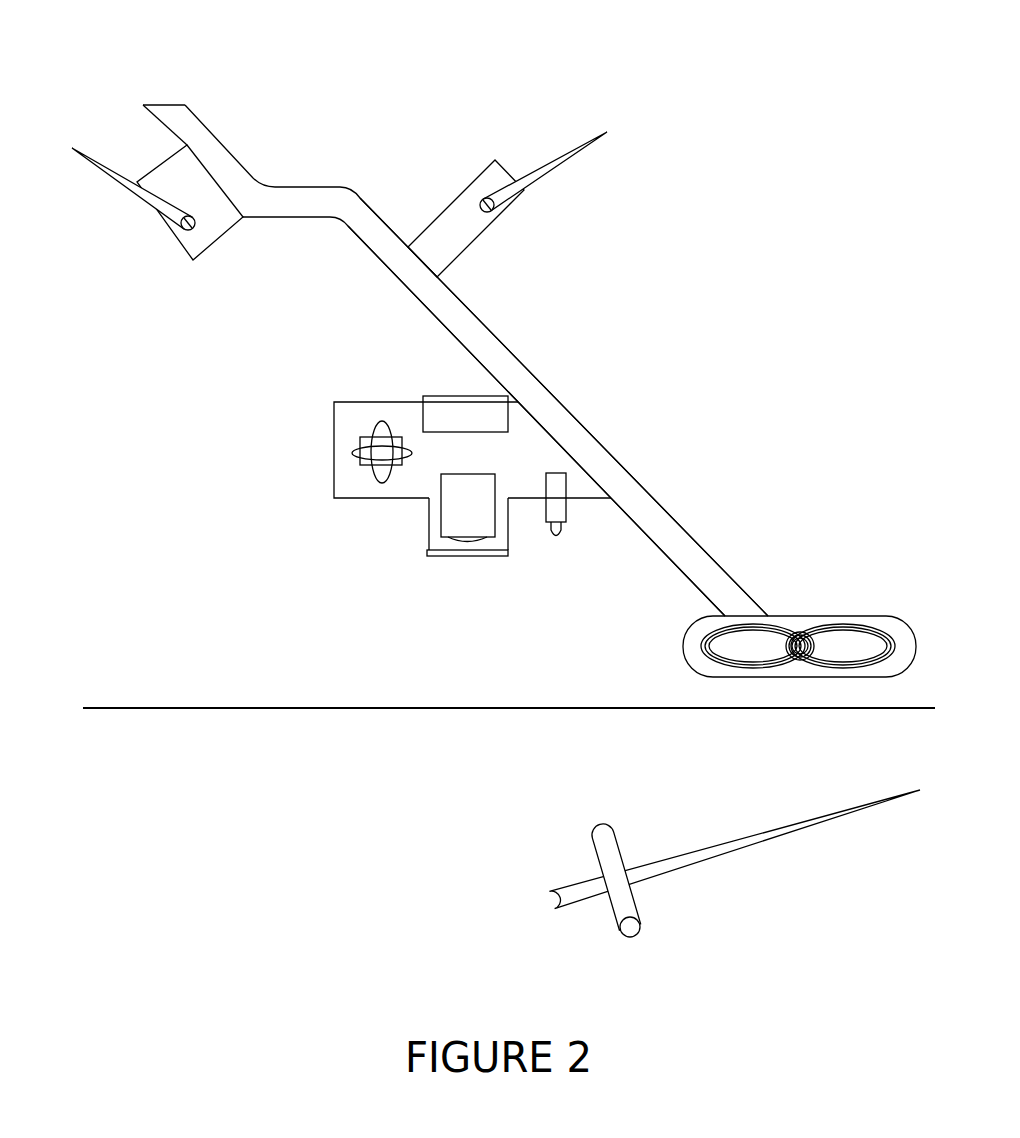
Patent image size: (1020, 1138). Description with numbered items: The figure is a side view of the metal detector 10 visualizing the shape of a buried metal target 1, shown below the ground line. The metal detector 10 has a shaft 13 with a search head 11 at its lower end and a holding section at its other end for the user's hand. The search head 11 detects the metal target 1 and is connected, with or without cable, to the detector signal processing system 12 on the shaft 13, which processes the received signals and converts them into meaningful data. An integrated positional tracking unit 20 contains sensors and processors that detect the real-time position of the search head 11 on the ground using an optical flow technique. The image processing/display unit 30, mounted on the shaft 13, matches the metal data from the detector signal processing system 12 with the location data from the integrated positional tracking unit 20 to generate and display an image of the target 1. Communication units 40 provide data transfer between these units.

The target 1 is at (679, 858).
The metal detector 10 is at (499, 360).
The search head 11 is at (800, 592).
The detector signal processing system 12 is at (190, 257).
The shaft 13 is at (581, 407).
The integrated positional tracking unit 20 is at (465, 426).
The image processing/display unit 30 is at (443, 164).
The communication unit 40 is at (335, 148).